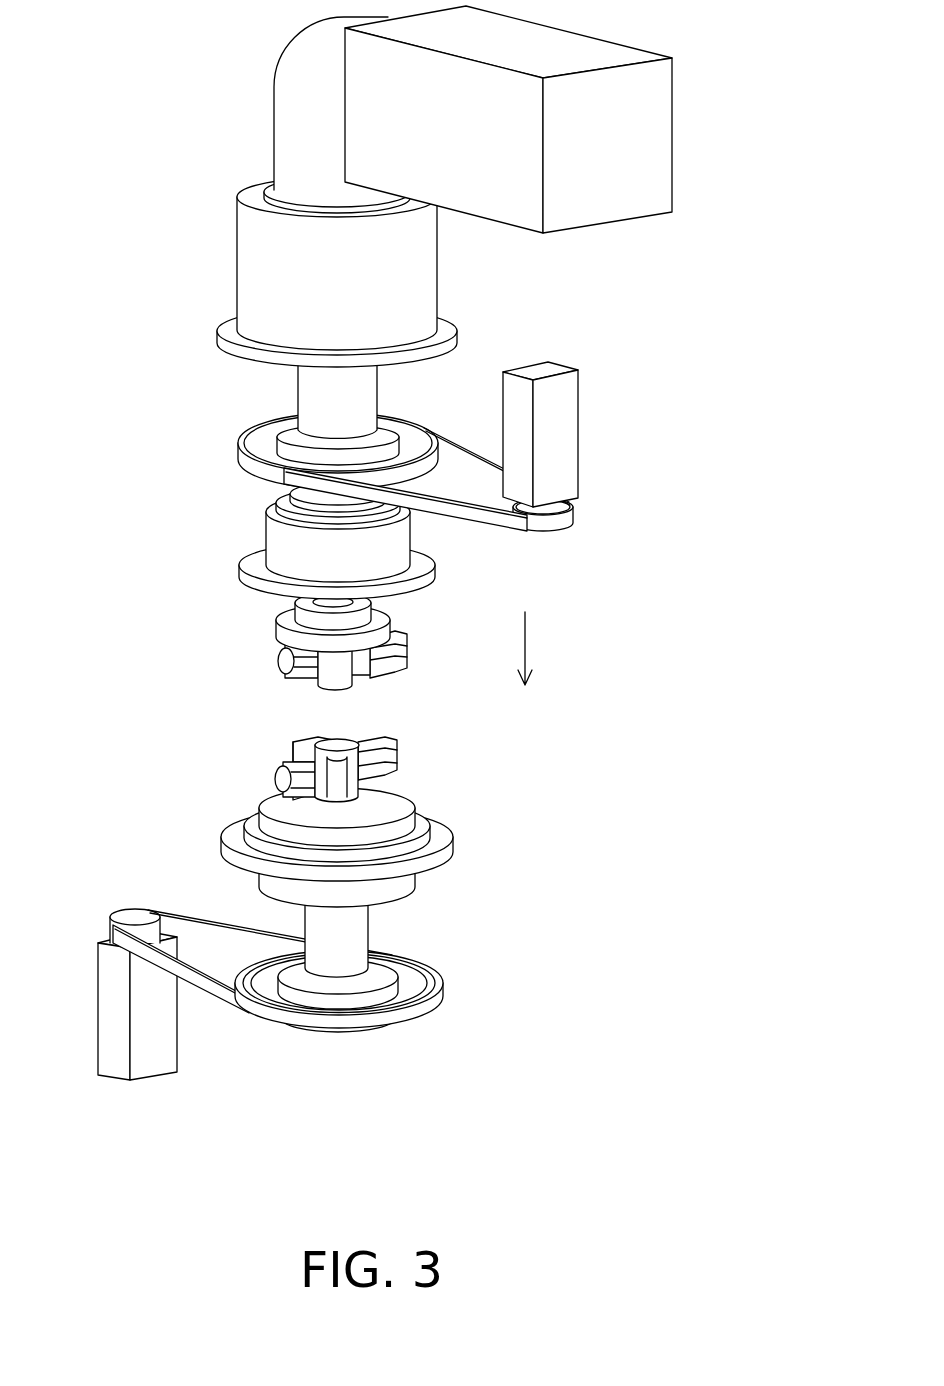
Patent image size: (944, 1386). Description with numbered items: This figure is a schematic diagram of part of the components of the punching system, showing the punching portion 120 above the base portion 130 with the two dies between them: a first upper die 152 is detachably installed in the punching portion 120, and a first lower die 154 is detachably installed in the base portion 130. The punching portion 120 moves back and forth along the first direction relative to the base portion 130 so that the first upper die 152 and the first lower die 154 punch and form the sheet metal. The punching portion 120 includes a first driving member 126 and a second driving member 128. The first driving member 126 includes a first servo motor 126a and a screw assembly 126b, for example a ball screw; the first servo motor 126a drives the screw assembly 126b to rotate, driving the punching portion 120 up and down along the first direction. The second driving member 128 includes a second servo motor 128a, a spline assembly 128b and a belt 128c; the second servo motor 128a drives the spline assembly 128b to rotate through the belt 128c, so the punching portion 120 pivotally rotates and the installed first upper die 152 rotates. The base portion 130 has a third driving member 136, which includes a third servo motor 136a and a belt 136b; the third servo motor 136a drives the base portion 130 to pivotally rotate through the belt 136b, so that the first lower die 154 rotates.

The punching portion 120 is at (185, 233).
The first driving member 126 is at (493, 186).
The first servo motor 126a is at (592, 210).
The screw assembly 126b is at (412, 288).
The second driving member 128 is at (500, 474).
The second servo motor 128a is at (565, 454).
The spline assembly 128b is at (397, 542).
The belt 128c is at (560, 518).
The base portion 130 is at (369, 992).
The third driving member 136 is at (245, 1052).
The third servo motor 136a is at (157, 1067).
The belt 136b is at (221, 987).
The first upper die 152 is at (337, 687).
The first lower die 154 is at (335, 745).